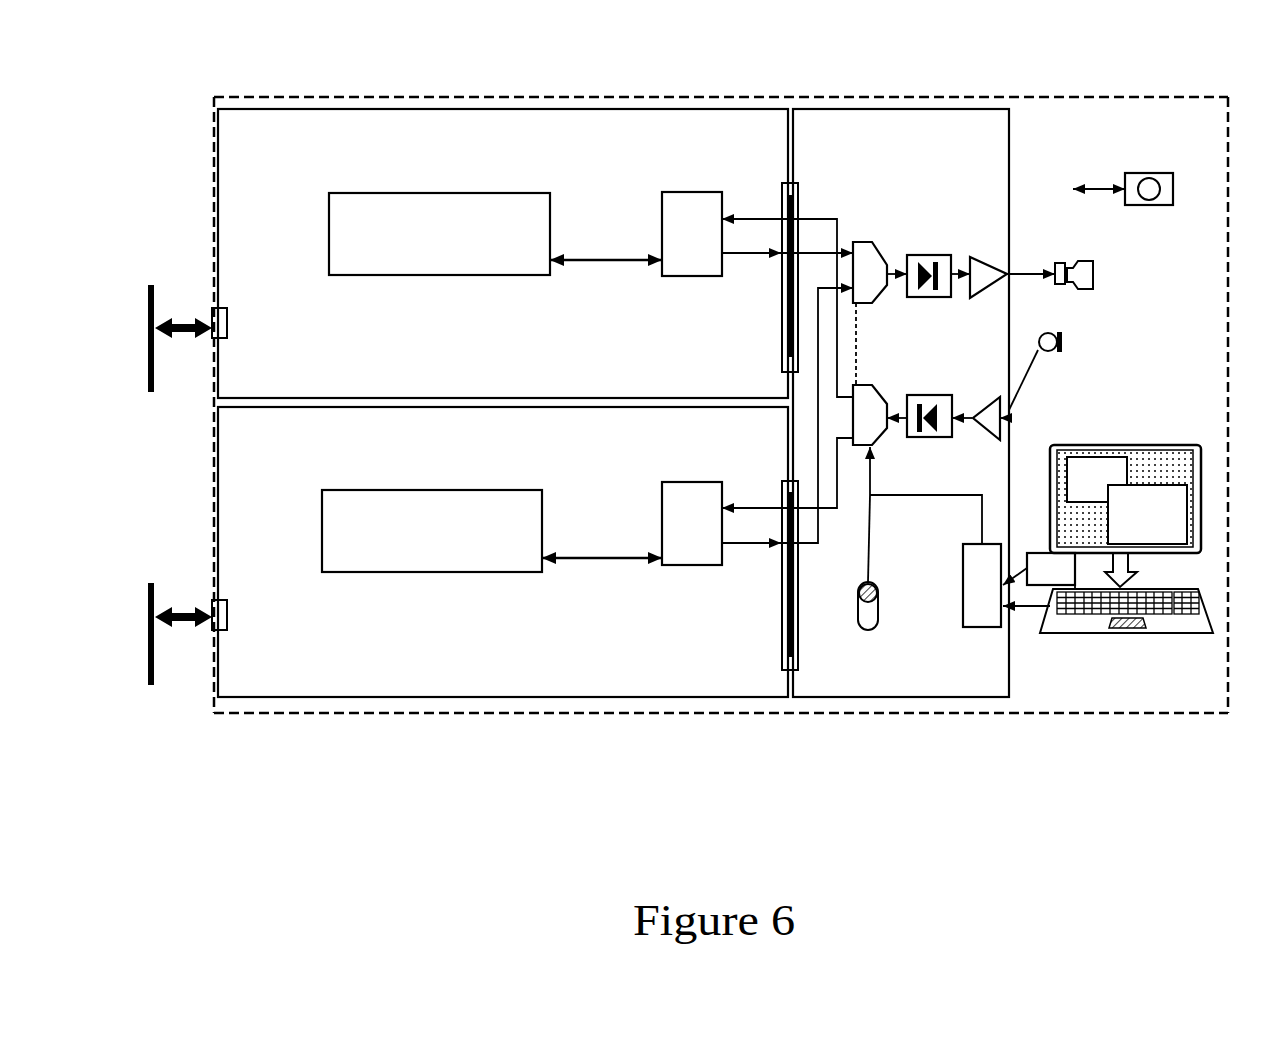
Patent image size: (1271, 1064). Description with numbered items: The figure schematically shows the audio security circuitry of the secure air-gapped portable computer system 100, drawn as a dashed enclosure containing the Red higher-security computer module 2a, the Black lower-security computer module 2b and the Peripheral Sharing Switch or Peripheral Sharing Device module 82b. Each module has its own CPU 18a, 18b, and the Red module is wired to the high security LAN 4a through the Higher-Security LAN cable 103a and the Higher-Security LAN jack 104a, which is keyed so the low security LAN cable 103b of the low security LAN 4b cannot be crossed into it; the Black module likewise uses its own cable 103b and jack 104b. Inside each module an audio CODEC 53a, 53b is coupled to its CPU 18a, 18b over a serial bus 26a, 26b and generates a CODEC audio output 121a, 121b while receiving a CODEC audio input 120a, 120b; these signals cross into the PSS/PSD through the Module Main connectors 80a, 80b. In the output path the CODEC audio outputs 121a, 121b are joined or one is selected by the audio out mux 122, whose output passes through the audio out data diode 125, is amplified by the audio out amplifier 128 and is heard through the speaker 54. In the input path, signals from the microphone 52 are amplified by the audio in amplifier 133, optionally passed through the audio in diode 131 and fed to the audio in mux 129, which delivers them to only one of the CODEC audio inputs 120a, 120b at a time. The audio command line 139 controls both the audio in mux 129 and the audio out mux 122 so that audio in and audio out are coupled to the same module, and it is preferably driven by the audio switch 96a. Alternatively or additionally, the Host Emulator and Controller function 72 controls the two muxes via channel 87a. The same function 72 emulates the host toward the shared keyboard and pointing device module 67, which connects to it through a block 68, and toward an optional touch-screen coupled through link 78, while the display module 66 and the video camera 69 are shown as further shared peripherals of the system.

The patient monitoring system 100 is at (448, 92).
The Red (Higher-Security) computer module 2a is at (216, 199).
The Black (Lower-Security) computer module 2b is at (211, 495).
The high security LAN 4a is at (148, 330).
The low security LAN 4b is at (148, 613).
The CPU 18a is at (329, 252).
The CPU 18b is at (322, 548).
The serial bus 26a is at (592, 262).
The serial bus 26b is at (592, 560).
The audio CODEC 53a is at (662, 220).
The audio CODEC 53b is at (662, 508).
The Module Main connector 80a is at (781, 354).
The Module Main connector 80b is at (798, 662).
The Peripheral Sharing Switch / Peripheral Sharing Device module 82b is at (883, 698).
The Higher-Security LAN cable 103a is at (192, 312).
The low security LAN cable 103b is at (192, 601).
The Higher-Security LAN jack 104a is at (214, 306).
The second transducer 104b is at (214, 596).
The CODEC audio input 120a is at (742, 216).
The CODEC audio input 120b is at (742, 504).
The CODEC audio output 121a is at (745, 255).
The CODEC audio output 121b is at (745, 545).
The audio out mux 122 is at (882, 252).
The audio out data diode 125 is at (930, 298).
The audio out amplifier 128 is at (990, 291).
The audio in mux 129 is at (862, 446).
The audio in diode 131 is at (925, 438).
The audio in amplifier 133 is at (988, 437).
The audio command line 139 is at (858, 356).
The channel 87a is at (935, 496).
The audio switch 96a is at (878, 593).
The microphone 52 is at (1042, 333).
The speaker 54 is at (1093, 276).
The display module 66 is at (1109, 444).
The keyboard and pointing device module 67 is at (1108, 634).
The input module 68 is at (1030, 552).
The video camera 69 is at (1173, 189).
The Host Emulator and Controller function 72 is at (1001, 627).
The link 78 is at (1132, 570).